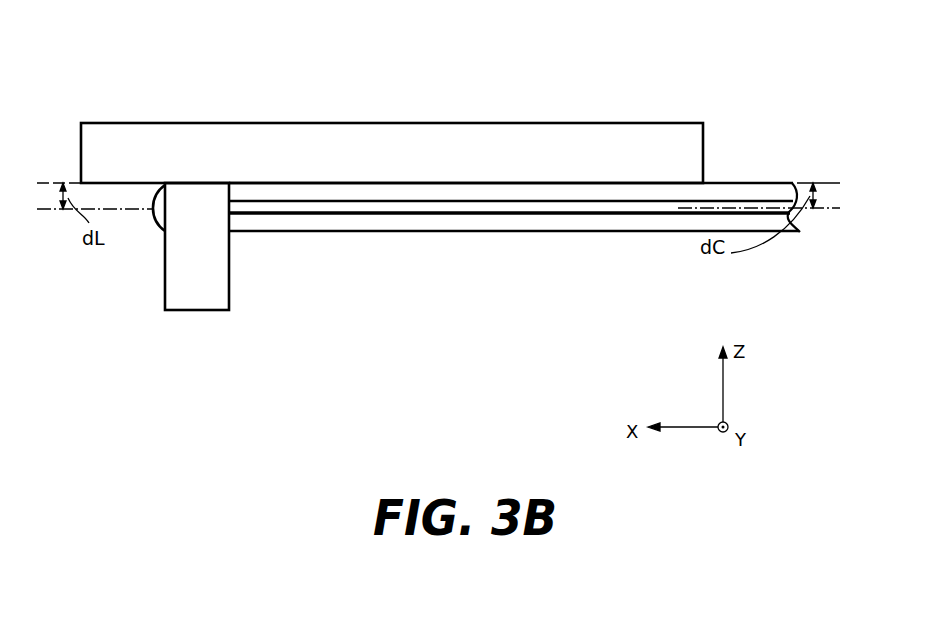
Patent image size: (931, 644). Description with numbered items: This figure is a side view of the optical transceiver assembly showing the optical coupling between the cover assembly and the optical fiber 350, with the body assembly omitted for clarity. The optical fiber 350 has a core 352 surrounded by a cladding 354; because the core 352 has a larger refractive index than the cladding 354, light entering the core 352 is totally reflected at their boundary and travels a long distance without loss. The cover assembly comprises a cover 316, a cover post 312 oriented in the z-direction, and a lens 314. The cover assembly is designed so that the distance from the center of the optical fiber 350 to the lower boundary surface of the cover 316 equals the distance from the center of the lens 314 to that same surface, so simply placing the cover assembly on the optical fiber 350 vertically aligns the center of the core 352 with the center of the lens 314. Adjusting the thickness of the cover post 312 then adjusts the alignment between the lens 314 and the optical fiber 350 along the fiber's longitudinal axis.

The cover post 312 is at (229, 281).
The lens 314 is at (151, 222).
The cover 316 is at (630, 122).
The optical fiber 350 is at (514, 249).
The core 352 is at (546, 276).
The cladding 354 is at (434, 222).